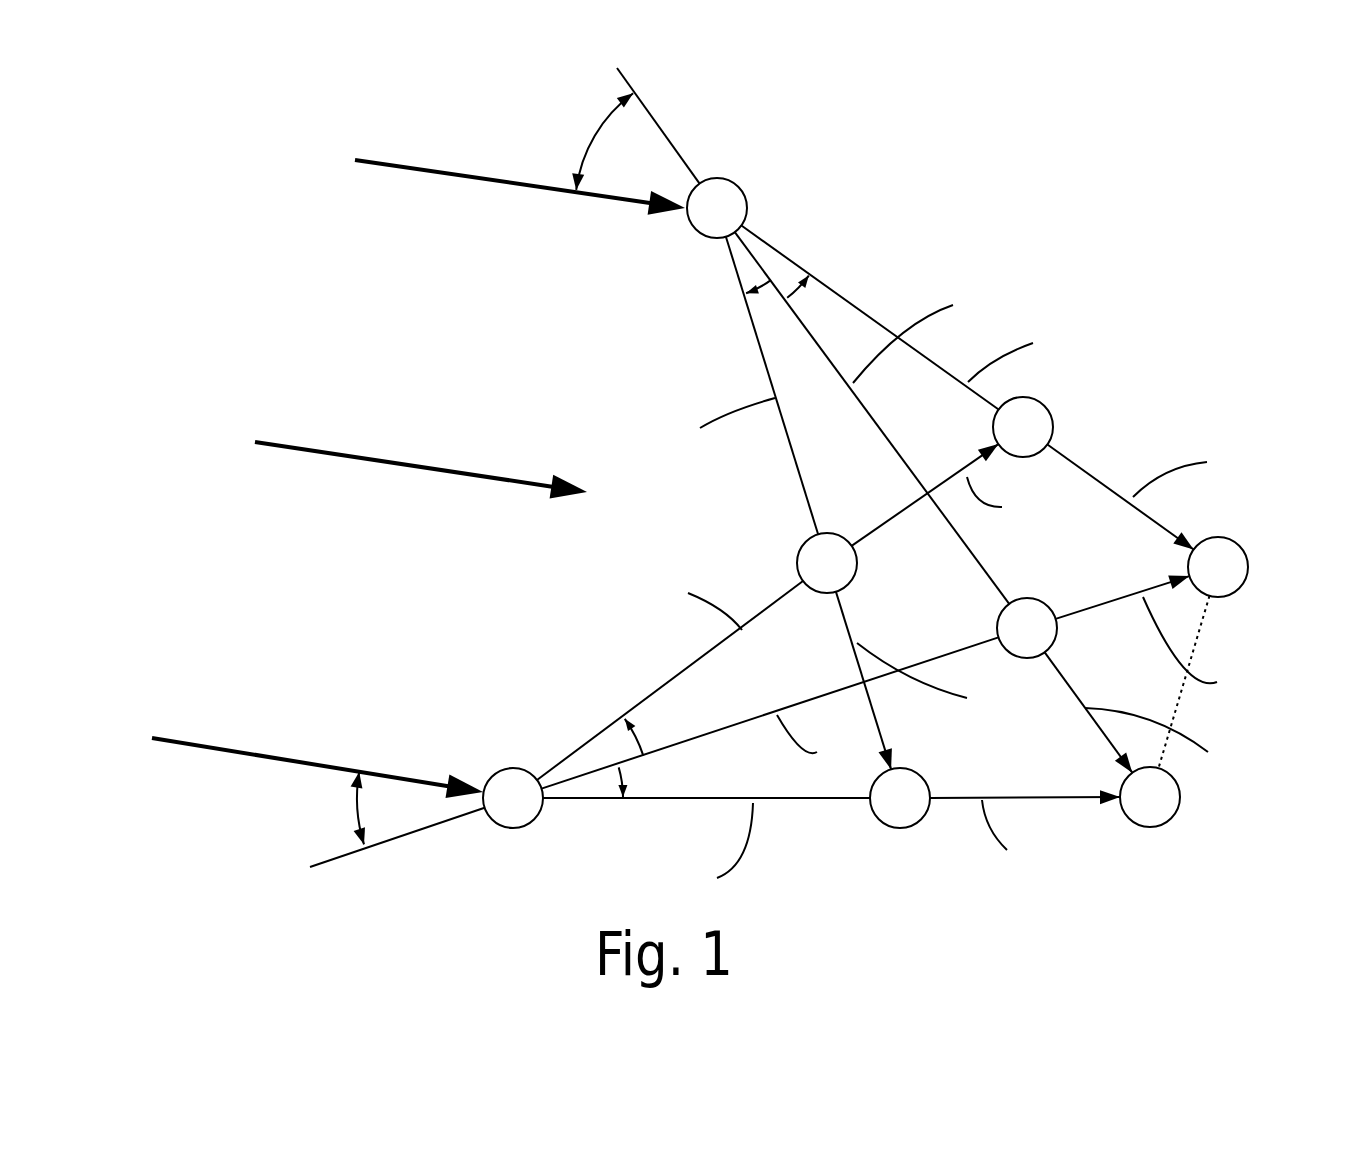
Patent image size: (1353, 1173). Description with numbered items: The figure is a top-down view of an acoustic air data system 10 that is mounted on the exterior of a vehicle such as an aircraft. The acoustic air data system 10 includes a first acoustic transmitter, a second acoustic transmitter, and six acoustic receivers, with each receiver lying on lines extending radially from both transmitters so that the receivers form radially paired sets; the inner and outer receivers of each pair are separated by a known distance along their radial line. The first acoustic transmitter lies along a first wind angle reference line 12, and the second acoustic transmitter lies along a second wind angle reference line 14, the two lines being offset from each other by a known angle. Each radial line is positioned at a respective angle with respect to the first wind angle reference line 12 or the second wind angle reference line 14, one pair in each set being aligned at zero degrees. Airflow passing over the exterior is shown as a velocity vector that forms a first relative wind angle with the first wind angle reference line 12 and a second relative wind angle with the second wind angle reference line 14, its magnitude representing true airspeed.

The acoustic air data system 10 is at (1162, 230).
The first wind angle reference line 12 is at (427, 830).
The second wind angle reference line 14 is at (760, 240).